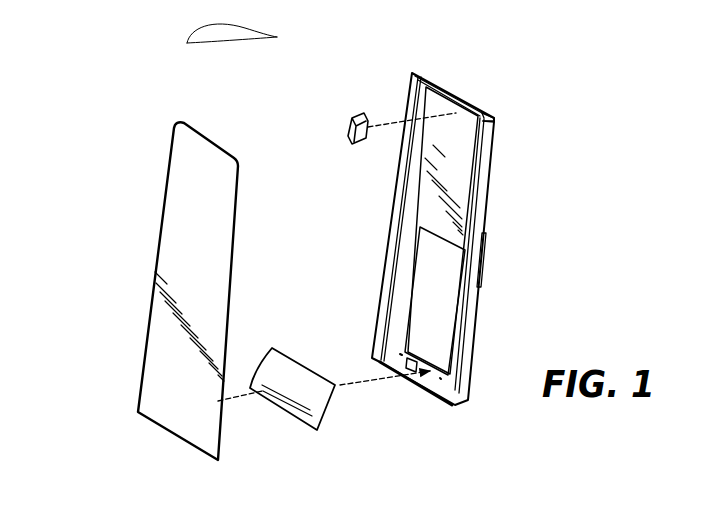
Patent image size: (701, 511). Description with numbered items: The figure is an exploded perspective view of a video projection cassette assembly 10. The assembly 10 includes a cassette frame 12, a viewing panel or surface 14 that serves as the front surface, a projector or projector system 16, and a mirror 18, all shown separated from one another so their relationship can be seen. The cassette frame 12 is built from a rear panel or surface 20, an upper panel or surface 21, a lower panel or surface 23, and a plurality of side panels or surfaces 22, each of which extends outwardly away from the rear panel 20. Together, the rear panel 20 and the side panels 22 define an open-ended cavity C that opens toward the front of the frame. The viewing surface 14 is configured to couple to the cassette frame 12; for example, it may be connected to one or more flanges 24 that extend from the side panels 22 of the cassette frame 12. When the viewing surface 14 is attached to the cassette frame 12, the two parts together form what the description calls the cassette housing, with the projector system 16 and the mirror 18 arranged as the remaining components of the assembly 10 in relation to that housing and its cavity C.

The video projection cassette assembly 10 is at (342, 84).
The cassette frame 12 is at (492, 262).
The viewing panel 14 is at (112, 313).
The projector system 16 is at (378, 100).
The mirror 18 is at (302, 350).
The rear panel 20 is at (462, 118).
The upper panel 21 is at (485, 108).
The side panels 22 is at (485, 163).
The lower panel 23 is at (423, 382).
The flanges 24 is at (470, 210).
The cavity C is at (443, 290).